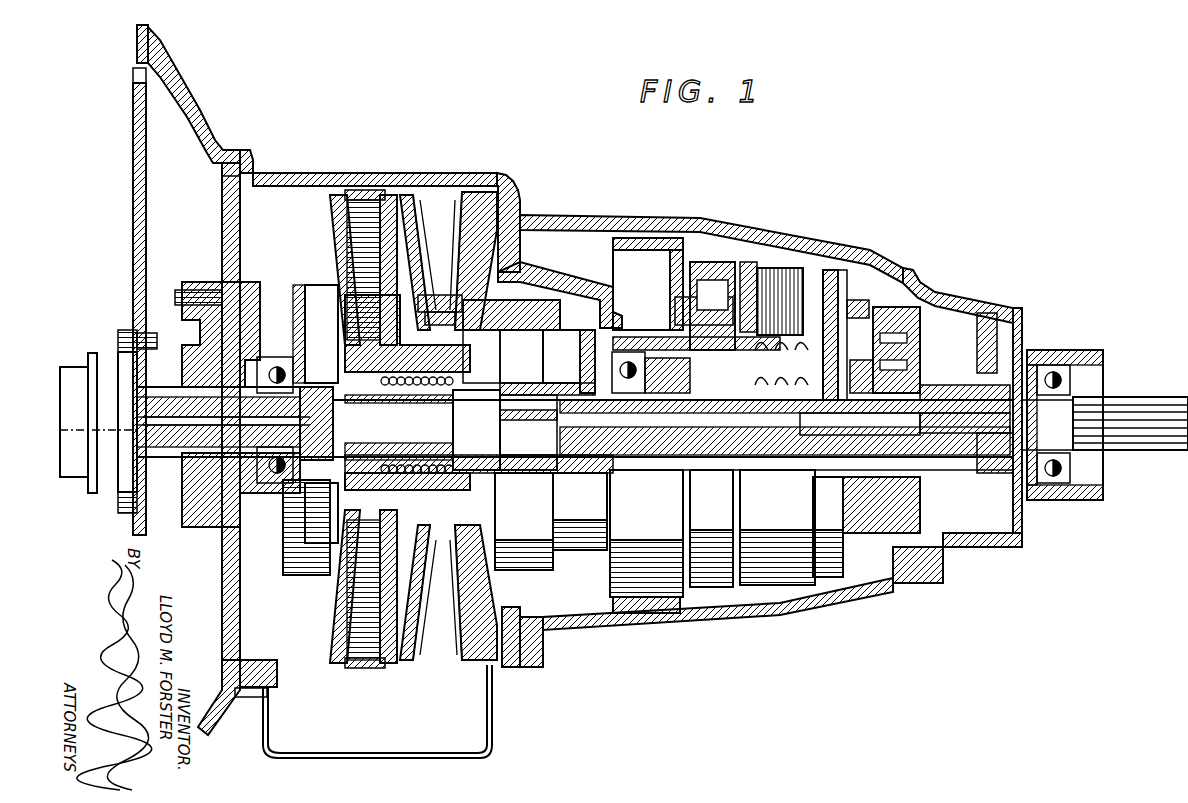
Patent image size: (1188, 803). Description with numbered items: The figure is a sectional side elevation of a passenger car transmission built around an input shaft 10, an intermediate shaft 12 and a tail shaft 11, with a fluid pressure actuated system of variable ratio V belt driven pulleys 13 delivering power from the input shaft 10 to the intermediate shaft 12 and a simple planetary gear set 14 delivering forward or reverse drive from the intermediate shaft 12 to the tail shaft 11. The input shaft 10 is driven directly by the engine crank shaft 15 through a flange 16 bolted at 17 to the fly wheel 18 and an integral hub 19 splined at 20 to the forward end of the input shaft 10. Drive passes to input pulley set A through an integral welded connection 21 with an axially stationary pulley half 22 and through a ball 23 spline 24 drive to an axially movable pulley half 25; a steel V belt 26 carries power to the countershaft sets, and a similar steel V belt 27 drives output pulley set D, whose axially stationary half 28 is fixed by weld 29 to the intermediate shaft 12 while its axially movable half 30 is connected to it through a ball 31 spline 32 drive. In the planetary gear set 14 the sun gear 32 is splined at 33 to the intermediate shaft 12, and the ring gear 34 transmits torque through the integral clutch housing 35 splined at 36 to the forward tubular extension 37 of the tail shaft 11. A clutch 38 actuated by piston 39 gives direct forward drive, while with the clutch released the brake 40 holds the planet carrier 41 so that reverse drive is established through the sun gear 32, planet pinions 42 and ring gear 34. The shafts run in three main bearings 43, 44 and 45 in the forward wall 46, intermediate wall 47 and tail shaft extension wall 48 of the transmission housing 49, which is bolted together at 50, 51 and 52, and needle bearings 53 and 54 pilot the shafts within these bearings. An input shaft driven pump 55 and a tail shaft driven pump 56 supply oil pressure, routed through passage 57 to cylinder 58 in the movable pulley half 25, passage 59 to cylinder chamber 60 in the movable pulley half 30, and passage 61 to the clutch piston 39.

The input shaft 10 is at (423, 424).
The tail shaft 11 is at (1127, 404).
The intermediate shaft 12 is at (673, 436).
The V belt driven pulleys 13 is at (313, 248).
The planetary gear set 14 is at (750, 253).
The engine crank shaft 15 is at (78, 372).
The flange 16 is at (118, 500).
The bolt 17 is at (120, 340).
The fly wheel 18 is at (133, 292).
The hub 19 is at (160, 396).
The spline 20 is at (160, 406).
The welded connection 21 is at (473, 393).
The axially stationary pulley half 22 is at (355, 292).
The ball 23 is at (418, 386).
The spline 24 is at (377, 386).
The axially movable pulley half 25 is at (345, 310).
The steel V belt 26 is at (358, 190).
The steel V belt 27 is at (440, 294).
The axially stationary half 28 is at (440, 310).
The weld 29 is at (546, 388).
The axially movable half 30 is at (497, 312).
The ball 31 is at (543, 357).
The sun gear 32 is at (488, 344).
The spline 33 is at (718, 394).
The ring gear 34 is at (712, 262).
The clutch housing 35 is at (850, 274).
The spline 36 is at (860, 364).
The tubular extension 37 is at (925, 388).
The clutch 38 is at (792, 268).
The piston 39 is at (838, 320).
The brake 40 is at (656, 238).
The planet carrier 41 is at (662, 266).
The planet pinions 42 is at (690, 304).
The main bearing 43 is at (276, 355).
The main bearing 44 is at (630, 378).
The main bearing 45 is at (1062, 366).
The forward wall 46 is at (243, 297).
The intermediate wall 47 is at (563, 266).
The tail shaft extension wall 48 is at (1040, 350).
The transmission housing 49 is at (568, 208).
The bolted joint 50 is at (252, 170).
The bolted joint 51 is at (525, 205).
The bolted joint 52 is at (922, 292).
The needle bearing 53 is at (538, 396).
The needle bearing 54 is at (850, 408).
The input shaft driven pump 55 is at (183, 330).
The tail shaft driven pump 56 is at (912, 352).
The oil passage 57 is at (293, 420).
The cylinder 58 is at (325, 334).
The oil passage 59 is at (720, 424).
The cylinder chamber 60 is at (576, 316).
The oil passage 61 is at (823, 405).